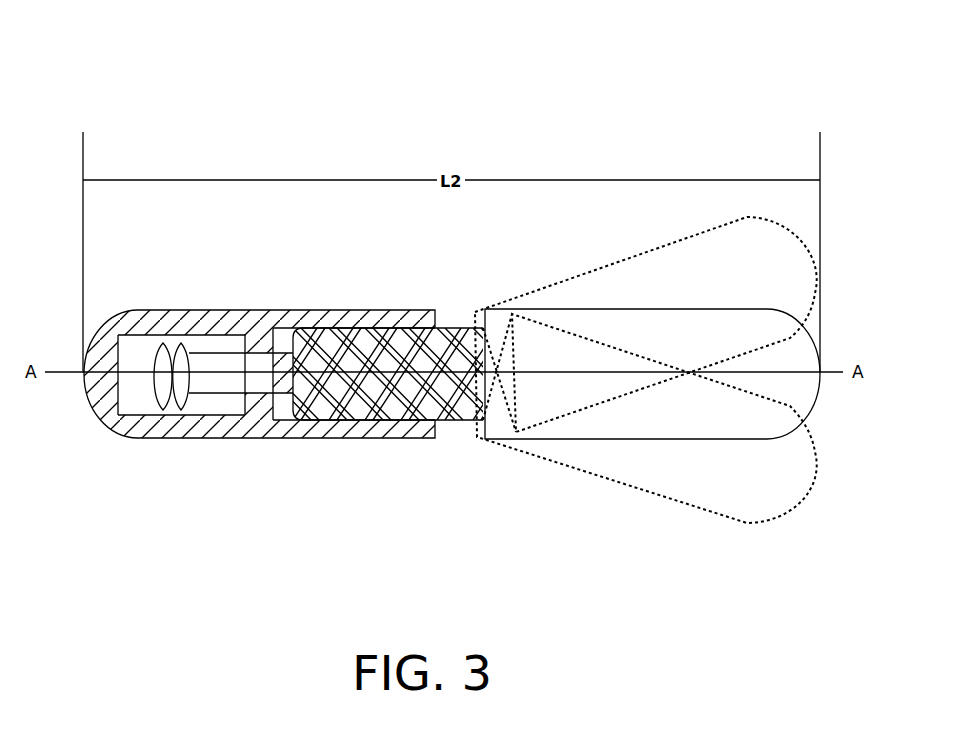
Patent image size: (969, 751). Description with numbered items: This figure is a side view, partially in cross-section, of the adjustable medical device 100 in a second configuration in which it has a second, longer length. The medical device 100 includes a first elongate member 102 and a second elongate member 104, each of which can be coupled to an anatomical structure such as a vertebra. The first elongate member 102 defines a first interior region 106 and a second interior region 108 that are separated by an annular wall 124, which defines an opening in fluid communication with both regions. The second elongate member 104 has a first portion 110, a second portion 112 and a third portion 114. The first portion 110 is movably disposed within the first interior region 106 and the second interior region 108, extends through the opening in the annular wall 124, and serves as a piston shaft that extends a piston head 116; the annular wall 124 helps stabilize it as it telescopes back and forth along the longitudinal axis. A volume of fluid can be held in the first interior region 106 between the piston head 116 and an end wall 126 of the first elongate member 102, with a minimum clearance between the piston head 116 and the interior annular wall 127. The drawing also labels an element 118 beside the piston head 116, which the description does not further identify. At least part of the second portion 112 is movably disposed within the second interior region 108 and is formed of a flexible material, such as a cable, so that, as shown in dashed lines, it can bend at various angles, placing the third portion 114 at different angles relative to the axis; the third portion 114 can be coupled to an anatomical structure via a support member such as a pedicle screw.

The adjustable medical device 100 is at (531, 60).
The first elongate member 102 is at (259, 364).
The second elongate member 104 is at (647, 381).
The first interior region 106 is at (167, 374).
The second interior region 108 is at (292, 328).
The first portion 110 is at (253, 386).
The second portion 112 is at (448, 422).
The third portion 114 is at (550, 441).
The piston head 116 is at (157, 334).
The second lens 118 is at (190, 334).
The annular wall 124 is at (240, 408).
The end wall 126 is at (119, 398).
The interior annular wall 127 is at (151, 413).